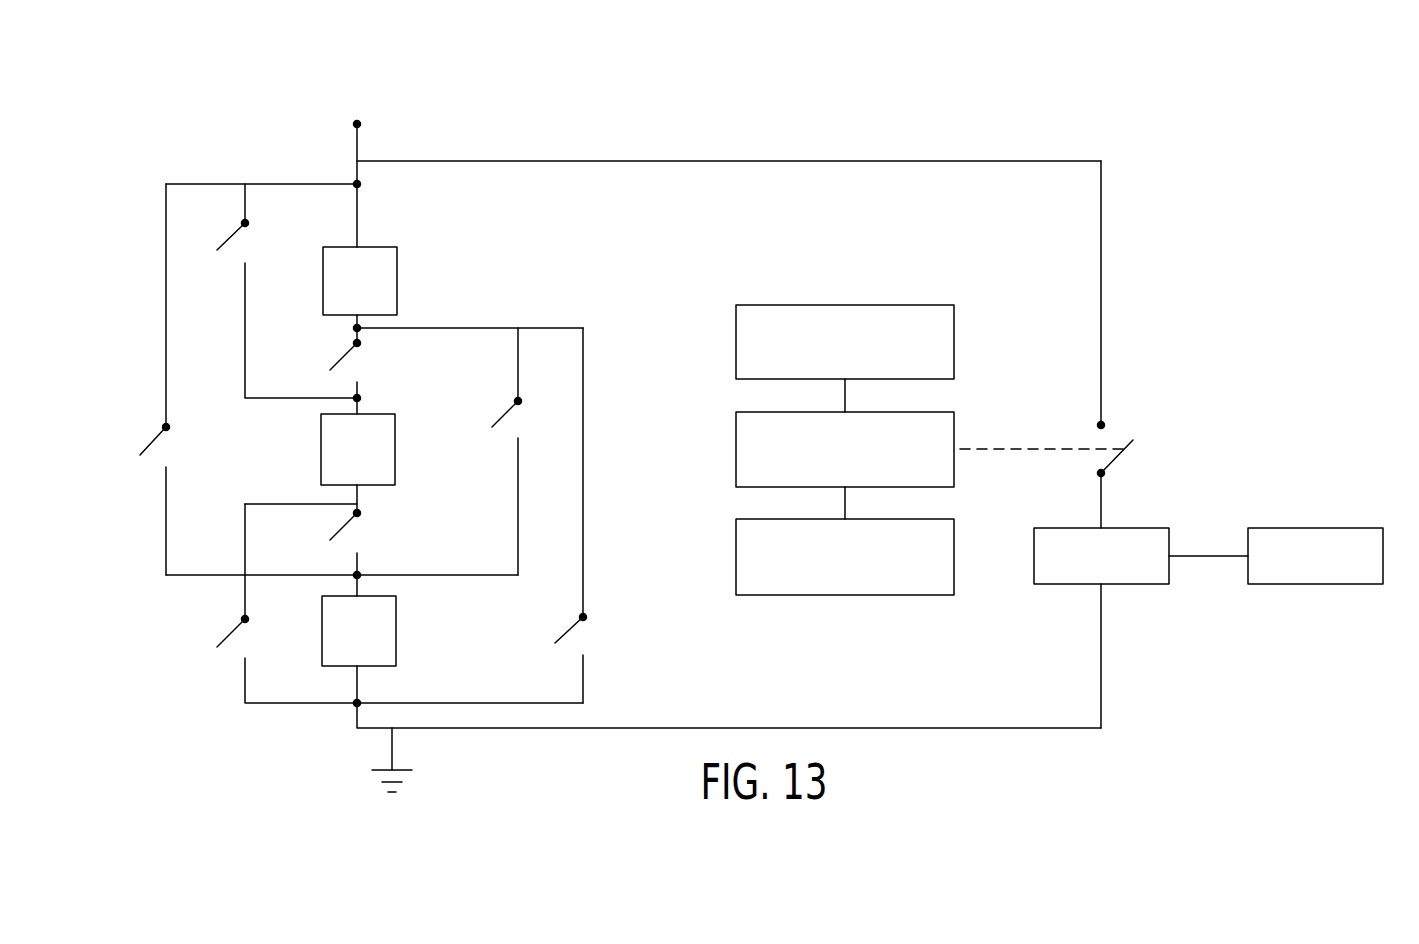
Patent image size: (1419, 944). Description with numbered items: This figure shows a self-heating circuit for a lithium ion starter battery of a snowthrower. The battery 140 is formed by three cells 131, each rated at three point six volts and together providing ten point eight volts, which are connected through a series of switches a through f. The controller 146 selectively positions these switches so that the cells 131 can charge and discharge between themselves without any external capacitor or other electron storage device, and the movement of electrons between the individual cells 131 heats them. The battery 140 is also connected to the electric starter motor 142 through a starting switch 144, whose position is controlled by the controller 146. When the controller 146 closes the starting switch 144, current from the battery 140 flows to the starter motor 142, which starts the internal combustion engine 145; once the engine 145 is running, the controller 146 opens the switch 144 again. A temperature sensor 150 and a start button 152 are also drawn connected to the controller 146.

The cells 131 is at (397, 293).
The lithium ion battery 140 is at (620, 451).
The electric starter motor 142 is at (1130, 584).
The starting switch 144 is at (1120, 455).
The internal combustion engine 145 is at (1313, 528).
The controller 146 is at (954, 435).
The temperature sensor 150 is at (954, 557).
The start button 152 is at (954, 340).